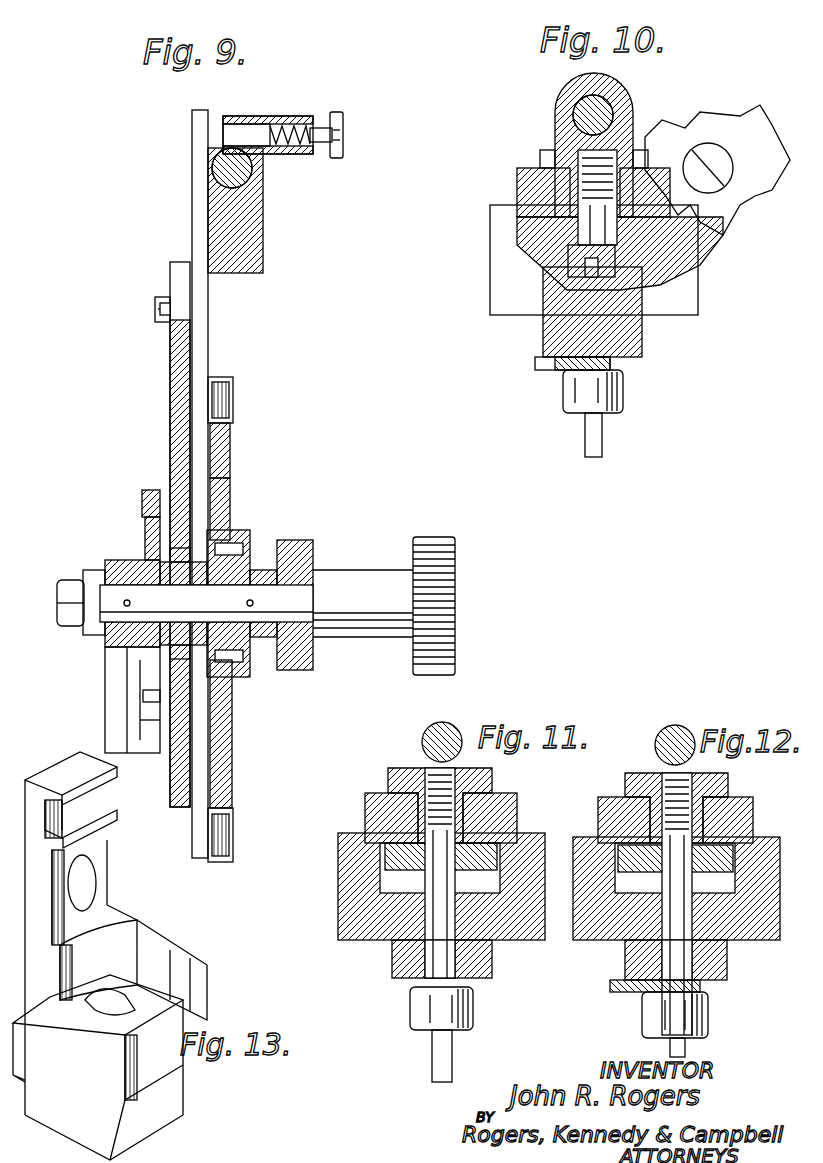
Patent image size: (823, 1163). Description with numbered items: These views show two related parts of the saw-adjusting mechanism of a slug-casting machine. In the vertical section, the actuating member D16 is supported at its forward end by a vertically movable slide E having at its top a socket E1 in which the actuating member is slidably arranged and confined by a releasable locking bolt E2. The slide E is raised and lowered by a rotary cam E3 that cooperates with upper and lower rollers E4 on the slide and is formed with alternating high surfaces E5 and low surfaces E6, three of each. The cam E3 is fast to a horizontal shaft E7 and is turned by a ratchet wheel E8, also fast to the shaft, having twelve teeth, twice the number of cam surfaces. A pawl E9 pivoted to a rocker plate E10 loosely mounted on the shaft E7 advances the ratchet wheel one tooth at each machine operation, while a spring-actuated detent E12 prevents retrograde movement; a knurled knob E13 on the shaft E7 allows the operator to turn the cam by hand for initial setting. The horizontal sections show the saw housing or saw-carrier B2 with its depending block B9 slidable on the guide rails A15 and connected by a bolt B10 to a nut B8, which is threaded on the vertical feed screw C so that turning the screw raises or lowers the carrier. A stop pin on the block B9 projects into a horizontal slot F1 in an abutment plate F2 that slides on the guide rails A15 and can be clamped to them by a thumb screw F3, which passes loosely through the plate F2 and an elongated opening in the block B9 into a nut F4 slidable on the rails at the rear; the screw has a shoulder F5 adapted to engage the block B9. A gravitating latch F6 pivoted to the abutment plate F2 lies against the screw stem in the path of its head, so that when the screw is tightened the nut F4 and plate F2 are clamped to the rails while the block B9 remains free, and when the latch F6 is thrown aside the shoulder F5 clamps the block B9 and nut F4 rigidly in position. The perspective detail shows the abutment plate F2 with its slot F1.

In FIG. 9, the slide E is at (210, 333).
In FIG. 9, the socket E1 is at (240, 190).
In FIG. 9, the actuating member D16 is at (236, 172).
In FIG. 9, the releasable locking bolt E2 is at (343, 140).
In FIG. 9, the rollers E4 is at (233, 400).
In FIG. 9, the low surfaces E6 is at (230, 450).
In FIG. 9, the rotary cam E3 is at (230, 494).
In FIG. 9, the spring-actuated detent E12 is at (142, 497).
In FIG. 9, the ratchet wheel E8 is at (145, 530).
In FIG. 9, the horizontal shaft E7 is at (256, 603).
In FIG. 9, the knurled knob E13 is at (455, 547).
In FIG. 9, the rocker plate E10 is at (105, 675).
In FIG. 9, the pawl E9 is at (150, 712).
In FIG. 9, the high surfaces E5 is at (232, 800).
In FIG. 10, the bolt B10 is at (540, 245).
In FIG. 10, the housing B2 is at (760, 140).
In FIG. 10, the depending block B9 is at (700, 265).
In FIG. 11, the depending block B9 is at (385, 862).
In FIG. 12, the depending block B9 is at (618, 850).
In FIG. 10, the nut B8 is at (555, 100).
In FIG. 10, the vertical feed screw C is at (608, 108).
In FIG. 11, the vertical feed screw C is at (425, 728).
In FIG. 12, the vertical feed screw C is at (658, 730).
In FIG. 10, the guide rails A15 is at (517, 175).
In FIG. 11, the guide rails A15 is at (365, 805).
In FIG. 12, the guide rails A15 is at (598, 805).
In FIG. 10, the abutment plate F2 is at (642, 340).
In FIG. 11, the abutment plate F2 is at (338, 920).
In FIG. 12, the abutment plate F2 is at (772, 940).
In FIG. 13, the abutment plate F2 is at (150, 945).
In FIG. 10, the gravitating latch F6 is at (540, 370).
In FIG. 12, the gravitating latch F6 is at (610, 986).
In FIG. 10, the thumb screw F3 is at (623, 395).
In FIG. 11, the thumb screw F3 is at (473, 1015).
In FIG. 12, the thumb screw F3 is at (642, 1025).
In FIG. 11, the nut F4 is at (410, 770).
In FIG. 12, the nut F4 is at (648, 773).
In FIG. 11, the shoulder F5 is at (392, 950).
In FIG. 12, the shoulder F5 is at (625, 950).
In FIG. 13, the horizontal slot F1 is at (100, 815).